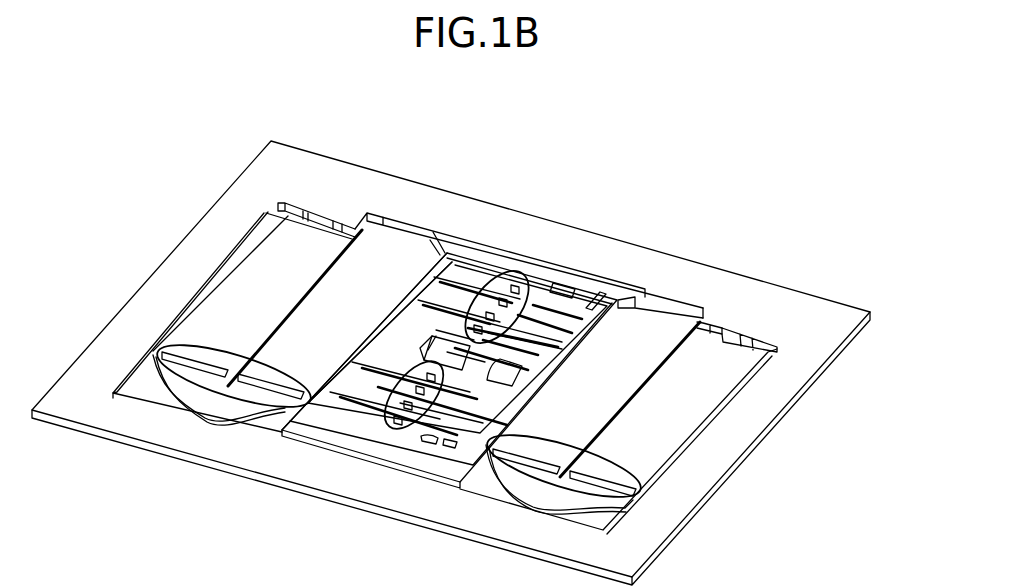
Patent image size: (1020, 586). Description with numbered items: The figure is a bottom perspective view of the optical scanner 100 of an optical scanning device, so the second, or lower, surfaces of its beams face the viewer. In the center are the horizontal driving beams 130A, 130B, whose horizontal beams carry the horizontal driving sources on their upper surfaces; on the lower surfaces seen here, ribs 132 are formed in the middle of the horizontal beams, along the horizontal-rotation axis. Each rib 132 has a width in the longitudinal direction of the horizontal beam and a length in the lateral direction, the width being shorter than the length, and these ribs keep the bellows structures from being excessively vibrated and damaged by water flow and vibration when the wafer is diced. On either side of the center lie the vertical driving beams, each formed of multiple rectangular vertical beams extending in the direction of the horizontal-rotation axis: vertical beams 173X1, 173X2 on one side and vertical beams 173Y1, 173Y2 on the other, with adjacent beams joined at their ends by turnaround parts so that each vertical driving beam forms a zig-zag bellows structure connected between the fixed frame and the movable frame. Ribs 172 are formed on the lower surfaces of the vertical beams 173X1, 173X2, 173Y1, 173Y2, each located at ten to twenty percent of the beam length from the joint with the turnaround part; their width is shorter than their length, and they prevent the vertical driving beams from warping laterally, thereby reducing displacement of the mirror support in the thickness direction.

The optical scanner 100 is at (78, 117).
The horizontal driving beam 130A is at (458, 263).
The horizontal driving beam 130B is at (374, 350).
The rib 132 is at (420, 362).
The rib 172 is at (163, 352).
The vertical beam 173X1 is at (355, 281).
The vertical beam 173X2 is at (272, 267).
The vertical beam 173Y1 is at (635, 342).
The vertical beam 173Y2 is at (722, 360).